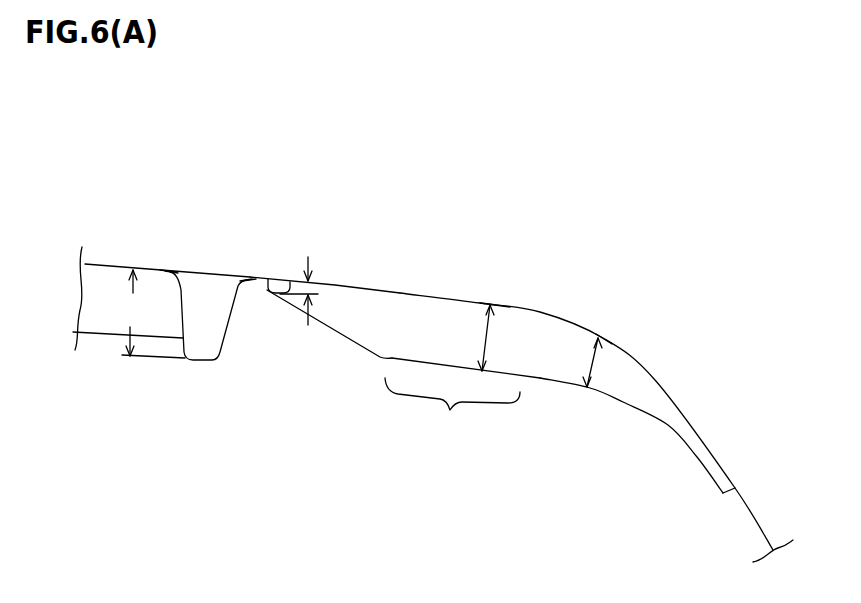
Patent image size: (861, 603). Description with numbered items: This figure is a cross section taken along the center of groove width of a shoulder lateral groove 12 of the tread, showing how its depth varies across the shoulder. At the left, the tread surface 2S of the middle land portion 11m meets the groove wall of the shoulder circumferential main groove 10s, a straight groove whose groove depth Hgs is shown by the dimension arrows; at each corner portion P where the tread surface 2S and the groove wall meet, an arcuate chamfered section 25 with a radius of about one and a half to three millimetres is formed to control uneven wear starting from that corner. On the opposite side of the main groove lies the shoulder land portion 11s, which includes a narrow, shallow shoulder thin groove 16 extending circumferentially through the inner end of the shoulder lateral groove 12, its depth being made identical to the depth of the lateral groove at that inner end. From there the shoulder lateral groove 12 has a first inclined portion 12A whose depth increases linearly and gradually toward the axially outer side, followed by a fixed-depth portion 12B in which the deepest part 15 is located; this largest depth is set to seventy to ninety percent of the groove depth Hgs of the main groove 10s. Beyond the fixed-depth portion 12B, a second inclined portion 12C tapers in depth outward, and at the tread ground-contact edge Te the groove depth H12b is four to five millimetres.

The middle land portion 11m is at (110, 262).
The corner portion P is at (168, 262).
The chamfered section 25 is at (177, 273).
The shoulder circumferential main groove 10s is at (208, 310).
The groove depth of shoulder circumferential main groove Hgs is at (146, 314).
The shoulder thin groove 16 is at (282, 278).
The first inclined portion 12A is at (340, 335).
The tread surface 2S is at (387, 288).
The shoulder lateral groove 12 is at (423, 270).
The shoulder land portion 11s is at (493, 263).
The fixed-depth portion 12B is at (455, 367).
The tread ground-contact edge Te is at (604, 330).
The groove depth at tread ground-contact edge H12b is at (595, 362).
The second inclined portion 12C is at (668, 425).
The deepest part 15 is at (452, 409).